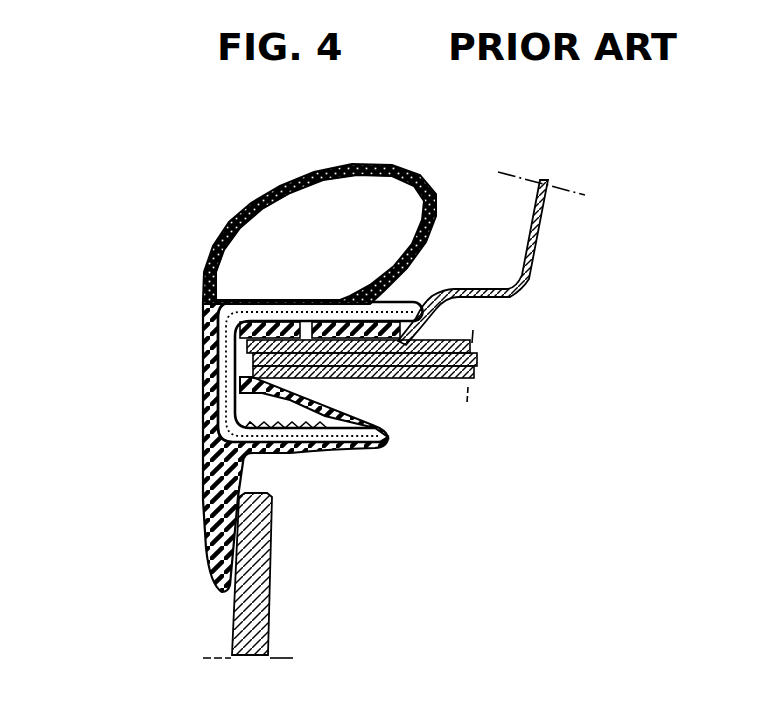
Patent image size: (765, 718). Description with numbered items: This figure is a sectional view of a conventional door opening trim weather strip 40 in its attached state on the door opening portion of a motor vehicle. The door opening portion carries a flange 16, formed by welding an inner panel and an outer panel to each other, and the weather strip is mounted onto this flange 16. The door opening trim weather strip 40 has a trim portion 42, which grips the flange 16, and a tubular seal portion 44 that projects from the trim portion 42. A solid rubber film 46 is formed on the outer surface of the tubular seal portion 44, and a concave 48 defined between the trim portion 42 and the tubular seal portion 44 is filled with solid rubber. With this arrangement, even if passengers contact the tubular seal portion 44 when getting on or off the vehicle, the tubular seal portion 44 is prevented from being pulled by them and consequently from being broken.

The flange 16 is at (407, 380).
The door opening trim weather strip 40 is at (190, 272).
The trim portion 42 is at (200, 390).
The tubular seal portion 44 is at (255, 208).
The solid rubber film 46 is at (290, 183).
The concave 48 is at (200, 305).